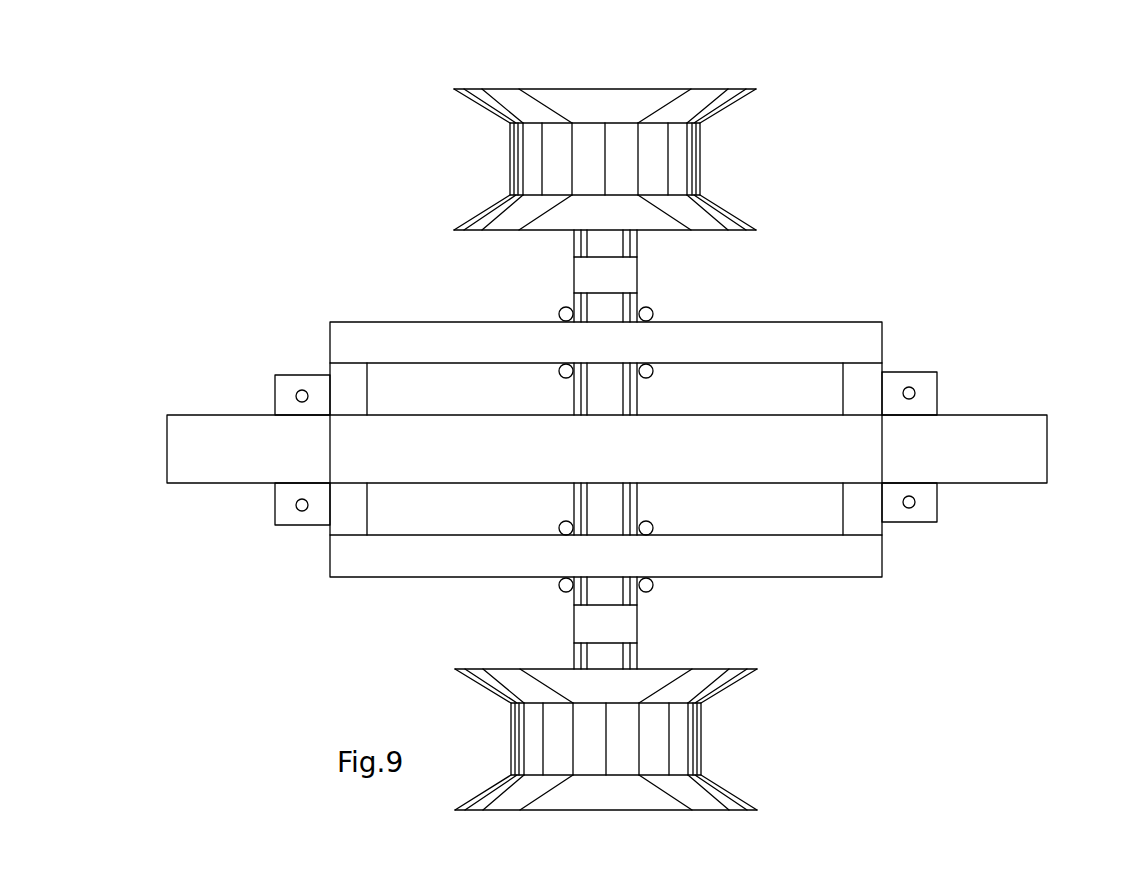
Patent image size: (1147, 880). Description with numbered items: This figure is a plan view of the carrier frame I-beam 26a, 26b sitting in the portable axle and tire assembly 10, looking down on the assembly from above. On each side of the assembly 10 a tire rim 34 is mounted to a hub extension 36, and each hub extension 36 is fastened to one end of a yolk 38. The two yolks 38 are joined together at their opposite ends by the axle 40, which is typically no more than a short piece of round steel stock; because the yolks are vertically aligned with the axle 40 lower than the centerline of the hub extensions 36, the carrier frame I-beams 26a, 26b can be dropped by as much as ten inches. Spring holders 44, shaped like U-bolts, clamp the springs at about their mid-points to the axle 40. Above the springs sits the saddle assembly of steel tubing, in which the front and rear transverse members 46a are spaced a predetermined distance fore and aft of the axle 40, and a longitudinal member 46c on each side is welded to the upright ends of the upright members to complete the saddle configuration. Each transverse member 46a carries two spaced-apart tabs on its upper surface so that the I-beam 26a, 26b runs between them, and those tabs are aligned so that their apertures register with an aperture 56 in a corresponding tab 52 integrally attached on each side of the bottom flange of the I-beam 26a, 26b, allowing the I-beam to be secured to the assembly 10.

The portable axle and tire assembly 10 is at (322, 219).
The tire rim 34 is at (618, 100).
The hub extensions 36 is at (580, 243).
The yolk 38 is at (627, 618).
The axle 40 is at (585, 385).
The spring holders 44 is at (652, 307).
The front and rear transverse members 46a is at (860, 388).
The longitudinal member 46c is at (733, 345).
The tab 52 is at (285, 380).
The aperture 56 is at (912, 507).
The carrier frame I-beam 26a is at (637, 489).
The carrier frame I-beam 26b is at (945, 452).